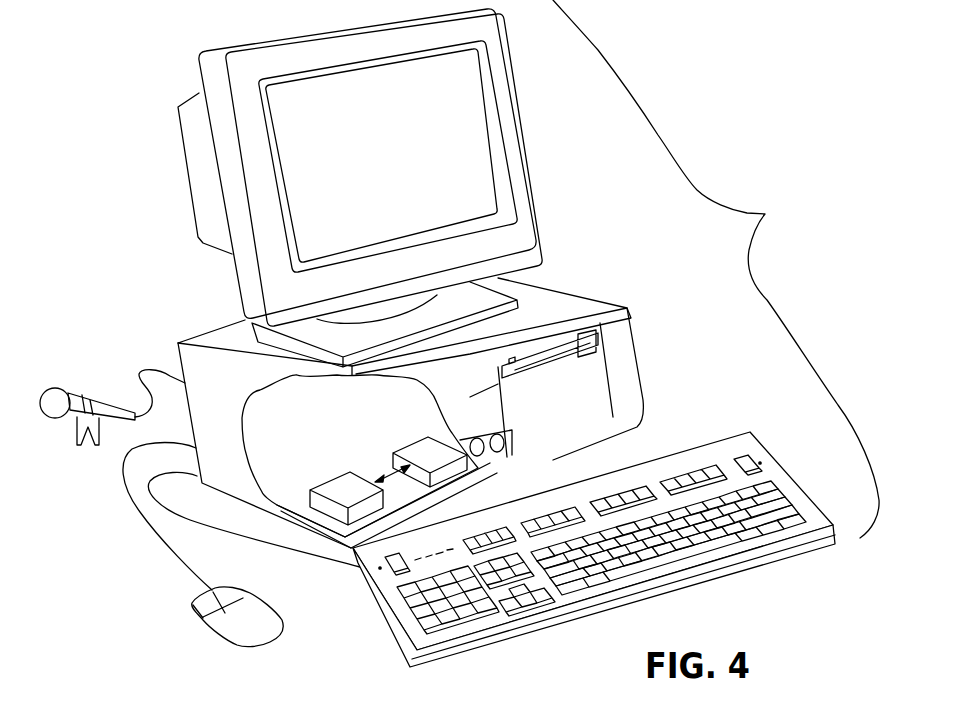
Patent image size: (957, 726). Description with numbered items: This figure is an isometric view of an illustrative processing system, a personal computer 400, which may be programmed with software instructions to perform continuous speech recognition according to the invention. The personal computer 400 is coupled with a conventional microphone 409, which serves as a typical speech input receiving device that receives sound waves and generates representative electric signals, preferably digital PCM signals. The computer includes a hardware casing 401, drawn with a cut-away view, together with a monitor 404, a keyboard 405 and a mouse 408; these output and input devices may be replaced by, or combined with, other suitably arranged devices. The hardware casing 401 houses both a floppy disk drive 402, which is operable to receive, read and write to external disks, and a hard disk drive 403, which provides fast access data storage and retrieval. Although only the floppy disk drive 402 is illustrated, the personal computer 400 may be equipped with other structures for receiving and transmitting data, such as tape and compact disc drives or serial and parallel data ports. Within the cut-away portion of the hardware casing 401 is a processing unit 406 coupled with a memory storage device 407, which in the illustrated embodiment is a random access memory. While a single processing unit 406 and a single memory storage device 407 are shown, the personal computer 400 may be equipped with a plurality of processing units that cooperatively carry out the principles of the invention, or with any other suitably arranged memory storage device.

The personal computer 400 is at (765, 214).
The hardware casing 401 is at (613, 303).
The floppy disk drive 402 is at (600, 339).
The hard disk drive 403 is at (565, 375).
The monitor 404 is at (232, 276).
The keyboard 405 is at (758, 438).
The processing unit 406 is at (403, 452).
The memory storage device 407 is at (317, 486).
The mouse 408 is at (193, 604).
The microphone 409 is at (101, 404).